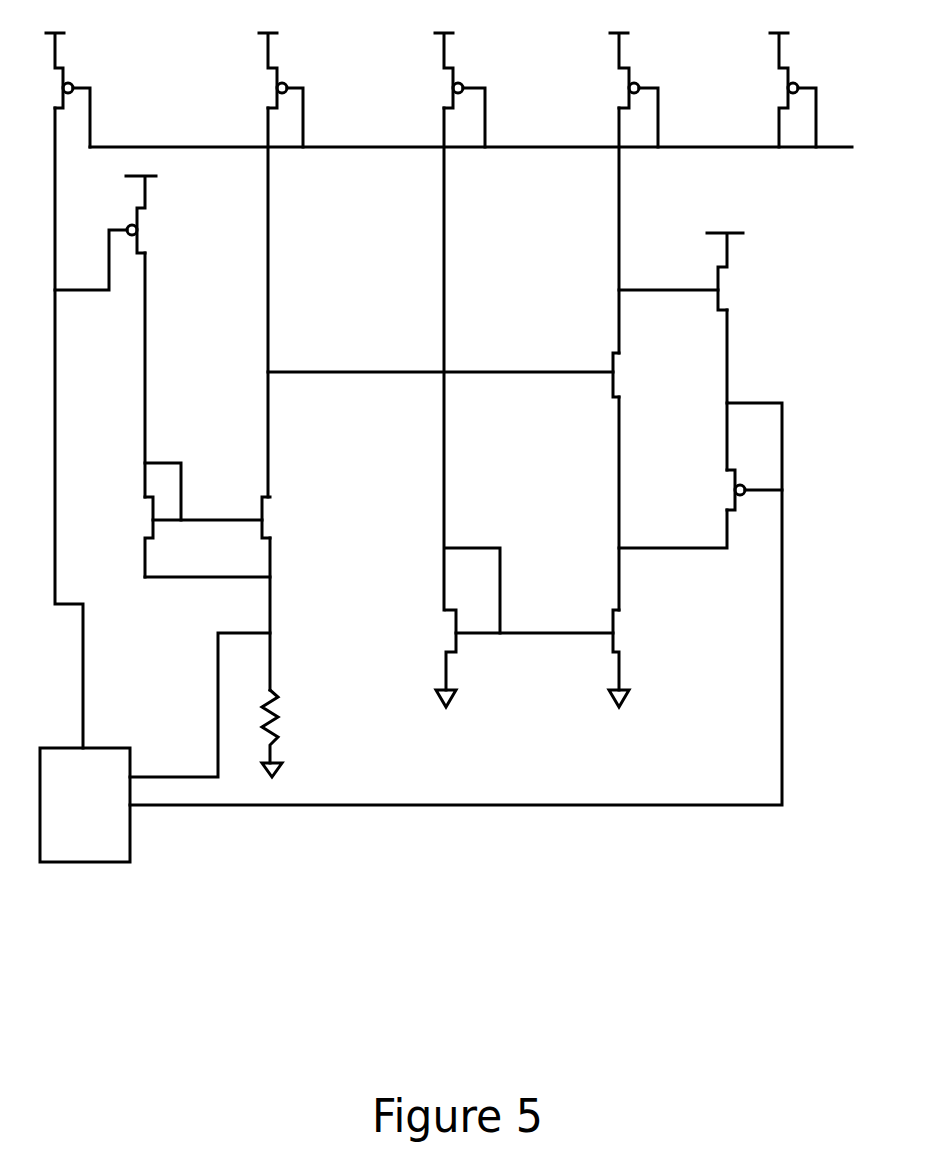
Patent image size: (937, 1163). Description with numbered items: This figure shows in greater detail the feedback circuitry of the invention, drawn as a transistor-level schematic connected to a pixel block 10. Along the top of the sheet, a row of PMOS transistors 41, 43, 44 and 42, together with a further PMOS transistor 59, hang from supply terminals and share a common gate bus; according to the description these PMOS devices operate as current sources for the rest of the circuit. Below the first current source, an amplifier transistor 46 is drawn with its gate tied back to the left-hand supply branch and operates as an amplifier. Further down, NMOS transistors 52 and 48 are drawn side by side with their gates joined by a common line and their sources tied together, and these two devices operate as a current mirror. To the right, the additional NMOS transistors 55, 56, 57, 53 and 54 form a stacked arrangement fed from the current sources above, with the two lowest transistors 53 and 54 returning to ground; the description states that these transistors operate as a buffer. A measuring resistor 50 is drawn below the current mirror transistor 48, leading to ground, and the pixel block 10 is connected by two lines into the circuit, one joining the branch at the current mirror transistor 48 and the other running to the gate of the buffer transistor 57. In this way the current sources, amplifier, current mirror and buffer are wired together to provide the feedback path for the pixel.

The PMOS transistor M4 41 is at (84, 90).
The PMOS transistor M6 43 is at (260, 90).
The PMOS transistor M7 44 is at (445, 90).
The PMOS transistor M5 42 is at (617, 90).
The PMOS transistor M19 59 is at (787, 90).
The transistor M9 46 is at (108, 233).
The NMOS transistor M12 52 is at (187, 520).
The NMOS transistor M11 48 is at (278, 517).
The NMOS transistor M15 55 is at (459, 375).
The NMOS transistor M16 56 is at (685, 271).
The transistor M17 57 is at (741, 490).
The NMOS transistor M13 53 is at (506, 658).
The NMOS transistor M14 54 is at (632, 658).
The resistor Rm 50 is at (290, 733).
The pixel 10 is at (85, 805).